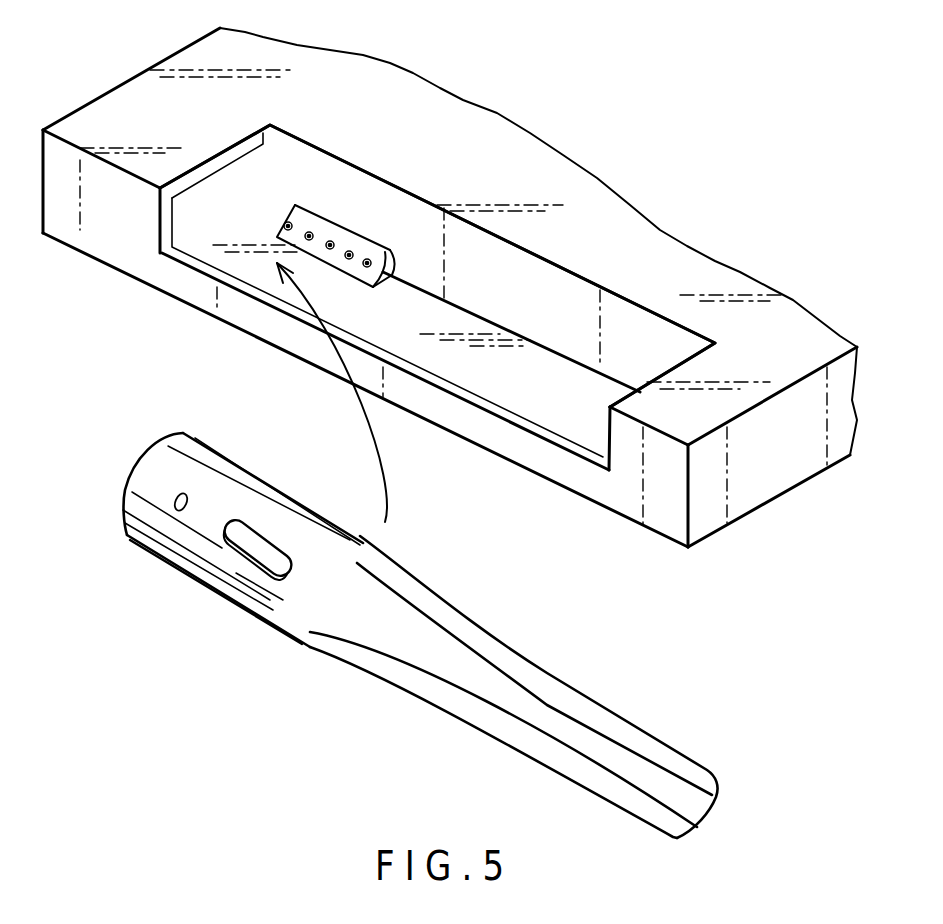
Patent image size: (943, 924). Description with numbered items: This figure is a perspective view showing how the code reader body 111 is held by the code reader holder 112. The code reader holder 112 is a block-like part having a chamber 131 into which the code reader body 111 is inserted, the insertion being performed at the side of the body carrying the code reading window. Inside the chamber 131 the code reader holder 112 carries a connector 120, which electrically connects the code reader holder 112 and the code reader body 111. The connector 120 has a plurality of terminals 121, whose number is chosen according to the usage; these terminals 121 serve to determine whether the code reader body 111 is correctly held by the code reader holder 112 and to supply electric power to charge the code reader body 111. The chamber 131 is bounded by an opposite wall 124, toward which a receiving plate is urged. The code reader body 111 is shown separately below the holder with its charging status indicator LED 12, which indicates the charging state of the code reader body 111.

The code reader holder 112 is at (135, 88).
The chamber 131 is at (180, 215).
The connector 120 is at (338, 228).
The terminals 121 is at (331, 241).
The opposite wall 124 is at (598, 402).
The charging status indicator LED 12 is at (176, 512).
The code reader body 111 is at (408, 685).